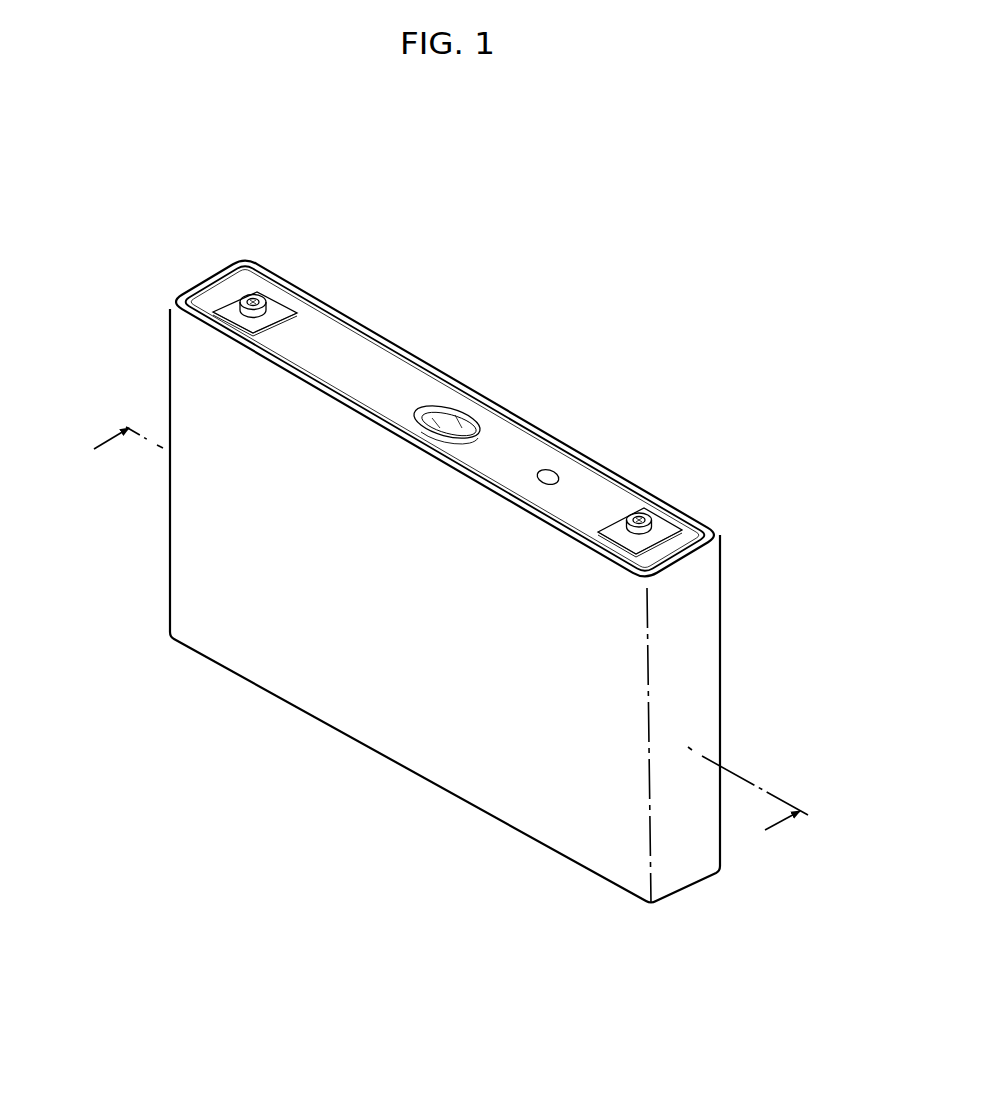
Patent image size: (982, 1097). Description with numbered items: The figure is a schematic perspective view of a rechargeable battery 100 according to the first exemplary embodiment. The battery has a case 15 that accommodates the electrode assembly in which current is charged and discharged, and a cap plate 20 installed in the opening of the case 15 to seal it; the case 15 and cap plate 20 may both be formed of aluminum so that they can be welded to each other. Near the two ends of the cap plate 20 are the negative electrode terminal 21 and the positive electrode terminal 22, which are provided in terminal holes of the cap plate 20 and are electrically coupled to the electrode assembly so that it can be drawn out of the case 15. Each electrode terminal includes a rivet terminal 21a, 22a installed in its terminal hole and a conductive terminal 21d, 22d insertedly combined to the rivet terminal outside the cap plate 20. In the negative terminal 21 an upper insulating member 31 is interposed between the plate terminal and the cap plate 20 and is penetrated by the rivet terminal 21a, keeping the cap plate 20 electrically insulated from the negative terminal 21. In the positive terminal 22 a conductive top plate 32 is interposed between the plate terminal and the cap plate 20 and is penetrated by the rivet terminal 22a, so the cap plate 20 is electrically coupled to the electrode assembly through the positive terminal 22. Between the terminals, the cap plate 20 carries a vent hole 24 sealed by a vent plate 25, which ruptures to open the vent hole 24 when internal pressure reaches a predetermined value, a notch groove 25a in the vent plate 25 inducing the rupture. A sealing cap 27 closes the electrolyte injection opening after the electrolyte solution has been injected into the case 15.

The rechargeable battery 100 is at (559, 228).
The case 15 is at (378, 715).
The cap plate 20 is at (337, 350).
The negative electrode terminal 21 is at (262, 249).
The rivet terminal 21a is at (254, 296).
The conductive terminal 21d is at (248, 314).
The positive electrode terminal 22 is at (687, 481).
The rivet terminal 22a is at (640, 515).
The conductive terminal 22d is at (655, 552).
The vent hole 24 is at (433, 403).
The vent plate 25 is at (450, 417).
The notch groove 25a is at (460, 436).
The sealing cap 27 is at (548, 471).
The upper insulating member 31 is at (231, 304).
The top plate 32 is at (644, 544).